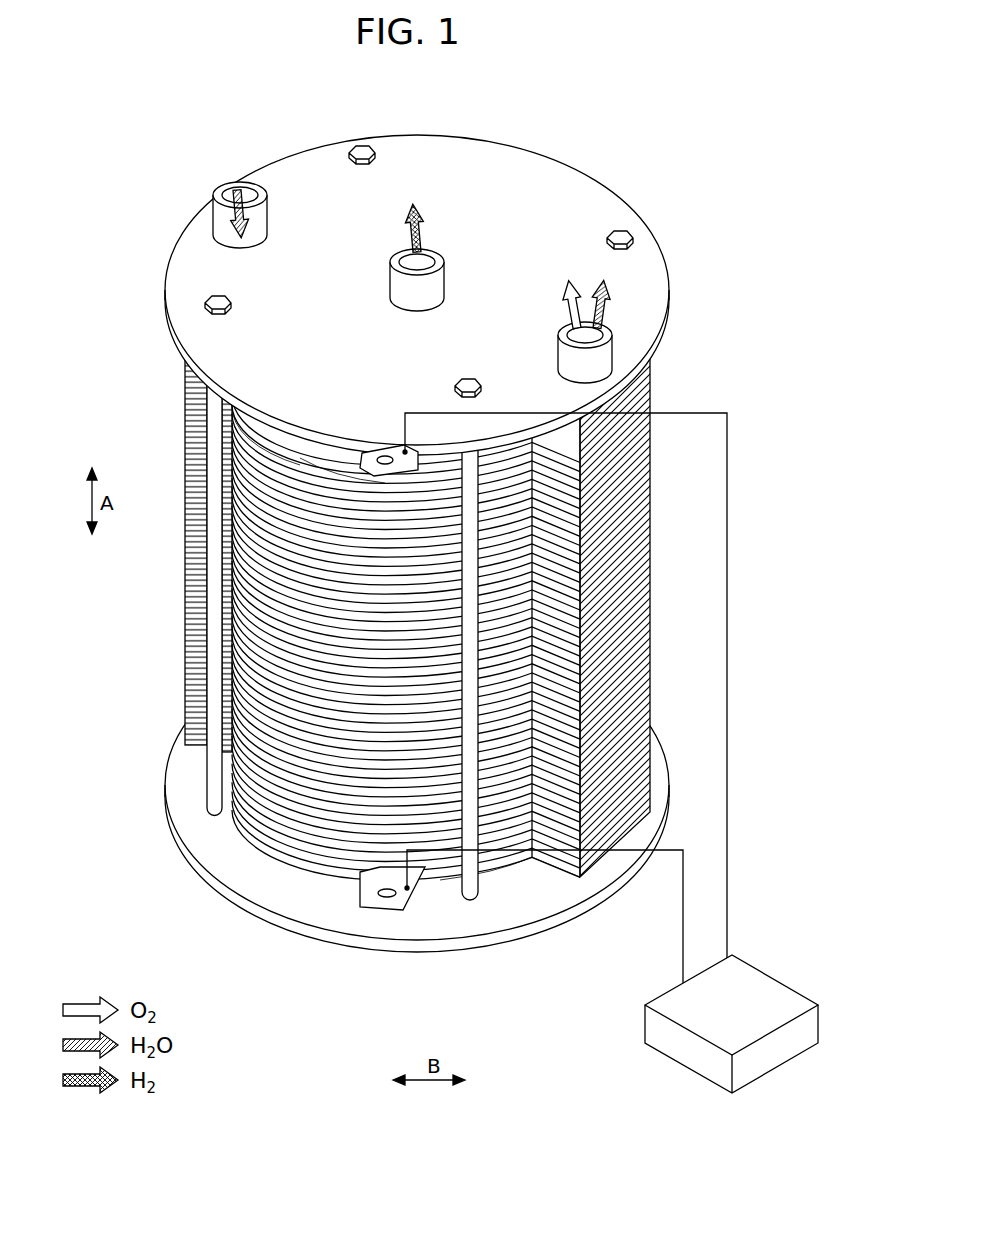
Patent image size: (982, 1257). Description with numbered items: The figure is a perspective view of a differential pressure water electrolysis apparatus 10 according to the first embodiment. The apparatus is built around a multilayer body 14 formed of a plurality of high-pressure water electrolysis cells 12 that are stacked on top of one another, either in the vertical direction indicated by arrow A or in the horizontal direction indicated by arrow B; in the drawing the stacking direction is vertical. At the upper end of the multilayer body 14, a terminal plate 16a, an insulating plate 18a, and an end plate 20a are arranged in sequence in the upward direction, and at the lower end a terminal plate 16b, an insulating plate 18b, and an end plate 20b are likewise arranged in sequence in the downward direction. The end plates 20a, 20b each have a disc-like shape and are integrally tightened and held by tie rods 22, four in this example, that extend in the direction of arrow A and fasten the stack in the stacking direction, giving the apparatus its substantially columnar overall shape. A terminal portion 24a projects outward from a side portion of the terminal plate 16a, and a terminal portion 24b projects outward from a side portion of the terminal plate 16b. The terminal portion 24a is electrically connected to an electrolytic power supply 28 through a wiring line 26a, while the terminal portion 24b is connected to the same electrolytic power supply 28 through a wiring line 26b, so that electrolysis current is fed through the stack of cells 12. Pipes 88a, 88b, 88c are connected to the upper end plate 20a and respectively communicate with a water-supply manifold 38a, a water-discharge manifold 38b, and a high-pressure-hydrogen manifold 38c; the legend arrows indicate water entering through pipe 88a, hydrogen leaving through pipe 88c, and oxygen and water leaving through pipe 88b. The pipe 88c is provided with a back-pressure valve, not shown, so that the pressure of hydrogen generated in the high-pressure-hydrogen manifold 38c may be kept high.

The differential pressure water electrolysis apparatus 10 is at (461, 88).
The high-pressure water electrolysis cell 12 is at (232, 567).
The multilayer body 14 is at (360, 660).
The terminal plate 16a is at (346, 447).
The terminal plate 16b is at (522, 870).
The insulating plate 18a is at (312, 438).
The insulating plate 18b is at (505, 870).
The end plate 20a is at (603, 180).
The end plate 20b is at (654, 720).
The tie rod 22 is at (474, 892).
The terminal portion 24a is at (376, 453).
The terminal portion 24b is at (394, 910).
The wiring line 26a is at (728, 913).
The wiring line 26b is at (683, 950).
The electrolytic power supply 28 is at (784, 1000).
The water-supply manifold 38a is at (262, 208).
The water-discharge manifold 38b is at (612, 345).
The high-pressure-hydrogen manifold 38c is at (440, 273).
The pipe 88a is at (300, 215).
The pipe 88b is at (679, 331).
The pipe 88c is at (463, 257).